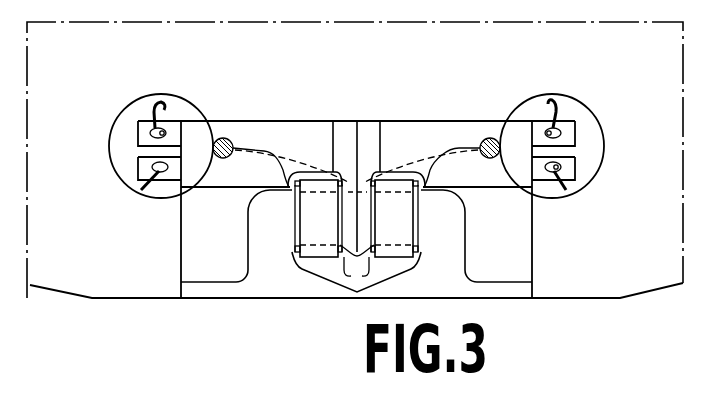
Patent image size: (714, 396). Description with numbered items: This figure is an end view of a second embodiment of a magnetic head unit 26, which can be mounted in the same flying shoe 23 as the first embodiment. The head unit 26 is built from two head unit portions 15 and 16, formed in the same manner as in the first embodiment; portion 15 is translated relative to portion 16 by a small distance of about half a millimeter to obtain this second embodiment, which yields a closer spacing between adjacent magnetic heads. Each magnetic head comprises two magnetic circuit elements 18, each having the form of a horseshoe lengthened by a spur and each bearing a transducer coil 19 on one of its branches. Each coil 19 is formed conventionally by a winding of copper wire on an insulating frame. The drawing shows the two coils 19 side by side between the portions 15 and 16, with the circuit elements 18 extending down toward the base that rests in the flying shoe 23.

The head unit portion 15 is at (270, 121).
The head unit portion 16 is at (432, 121).
The magnetic circuit element 18 is at (248, 249).
The transducer coil 19 is at (356, 229).
The flying shoe 23 is at (562, 298).
The head unit 26 is at (331, 345).